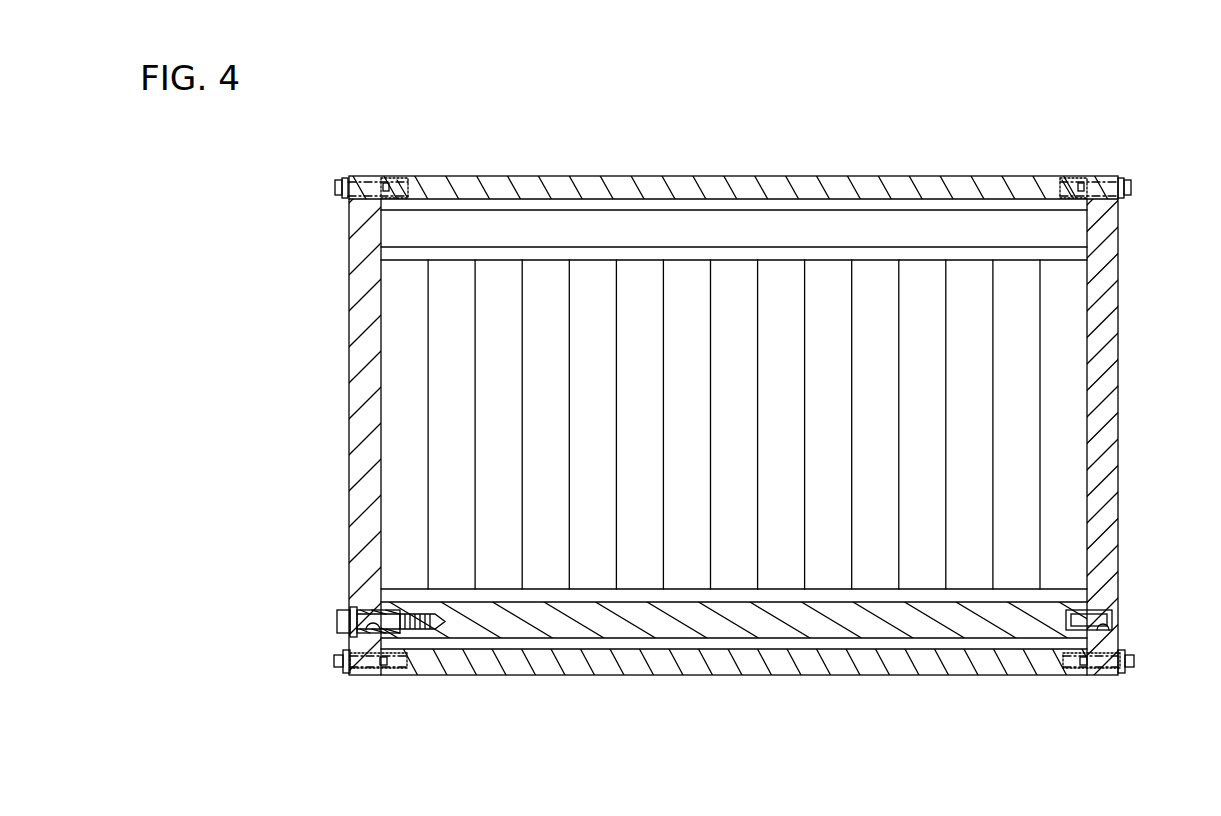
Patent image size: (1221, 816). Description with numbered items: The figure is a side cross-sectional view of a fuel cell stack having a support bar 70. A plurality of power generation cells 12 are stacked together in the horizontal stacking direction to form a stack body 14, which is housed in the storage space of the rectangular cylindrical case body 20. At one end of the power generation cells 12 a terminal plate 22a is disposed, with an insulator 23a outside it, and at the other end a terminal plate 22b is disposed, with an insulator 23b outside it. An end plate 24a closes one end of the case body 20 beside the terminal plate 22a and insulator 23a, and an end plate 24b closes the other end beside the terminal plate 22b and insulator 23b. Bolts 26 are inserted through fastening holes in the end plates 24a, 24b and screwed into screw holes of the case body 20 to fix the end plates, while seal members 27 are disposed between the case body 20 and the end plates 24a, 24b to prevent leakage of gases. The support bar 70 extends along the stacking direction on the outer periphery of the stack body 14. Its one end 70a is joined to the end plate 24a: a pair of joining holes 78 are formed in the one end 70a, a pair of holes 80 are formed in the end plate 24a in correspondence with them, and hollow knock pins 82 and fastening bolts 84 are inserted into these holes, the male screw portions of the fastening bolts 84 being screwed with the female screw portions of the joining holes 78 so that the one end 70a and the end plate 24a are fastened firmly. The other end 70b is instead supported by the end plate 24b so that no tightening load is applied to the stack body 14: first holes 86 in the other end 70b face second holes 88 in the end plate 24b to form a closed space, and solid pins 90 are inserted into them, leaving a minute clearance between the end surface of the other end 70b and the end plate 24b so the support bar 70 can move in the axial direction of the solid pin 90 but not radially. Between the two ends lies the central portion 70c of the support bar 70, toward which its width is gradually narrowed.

The power generation cell 12 is at (697, 280).
The stack body 14 is at (735, 257).
The case body 20 is at (866, 170).
The terminal plate 22a is at (450, 280).
The terminal plate 22b is at (1017, 277).
The insulator 23a is at (403, 268).
The insulator 23b is at (1063, 273).
The end plate 24a is at (358, 325).
The end plate 24b is at (1110, 325).
The bolt 26 is at (335, 186).
The seal member 27 is at (388, 668).
The support bar 70 is at (557, 208).
The one end of the support bar 70a is at (443, 650).
The other end of the support bar 70b is at (1015, 650).
The central portion of the support bar 70c is at (772, 640).
The joining hole 78 is at (378, 632).
The hole 80 is at (356, 615).
The hollow knock pin 82 is at (392, 608).
The fastening bolt 84 is at (337, 621).
The first hole 86 is at (1082, 608).
The second hole 88 is at (1110, 627).
The solid pin 90 is at (1108, 612).